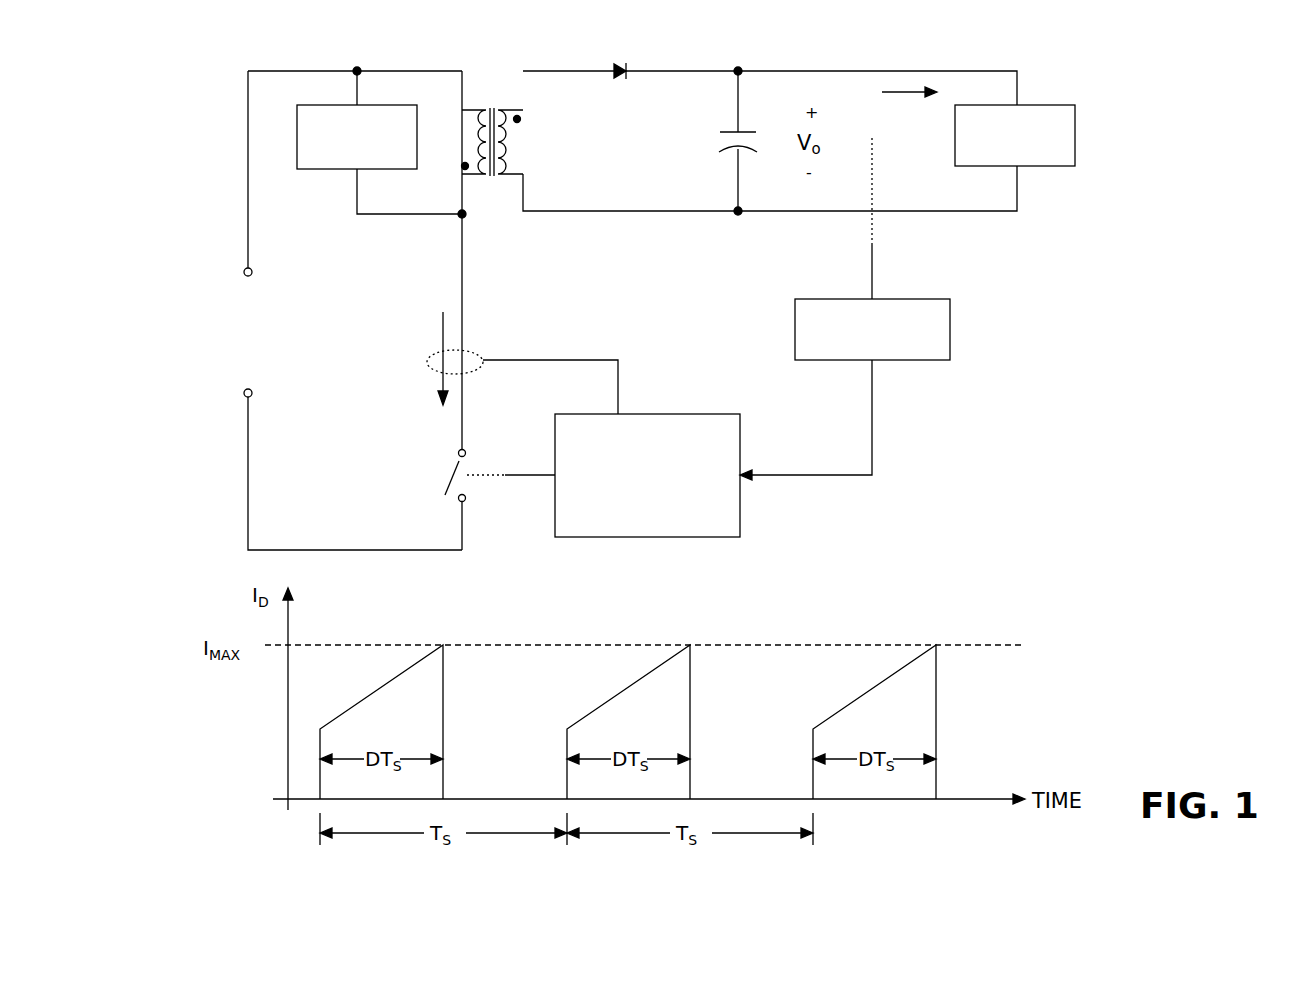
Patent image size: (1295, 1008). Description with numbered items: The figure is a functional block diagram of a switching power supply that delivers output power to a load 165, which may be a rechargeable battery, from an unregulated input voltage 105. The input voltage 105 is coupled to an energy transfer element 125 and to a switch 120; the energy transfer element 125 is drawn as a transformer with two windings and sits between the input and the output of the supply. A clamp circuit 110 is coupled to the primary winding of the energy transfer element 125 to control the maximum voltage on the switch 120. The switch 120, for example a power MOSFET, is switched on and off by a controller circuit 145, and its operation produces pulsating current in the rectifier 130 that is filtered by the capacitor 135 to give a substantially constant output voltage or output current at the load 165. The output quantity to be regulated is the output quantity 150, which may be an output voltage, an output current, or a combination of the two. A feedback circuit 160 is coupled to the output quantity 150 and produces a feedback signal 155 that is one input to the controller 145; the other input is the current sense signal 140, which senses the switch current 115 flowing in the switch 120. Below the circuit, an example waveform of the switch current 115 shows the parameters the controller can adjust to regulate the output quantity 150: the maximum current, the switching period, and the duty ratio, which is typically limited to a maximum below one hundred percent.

The input voltage V_IN 105 is at (233, 352).
The clamp circuit 110 is at (330, 172).
The current I_D 115 is at (428, 315).
The switch S1 120 is at (445, 462).
The energy transfer element T1 125 is at (492, 195).
The rectifier D1 130 is at (612, 80).
The capacitor C1 135 is at (728, 126).
The current sense signal 140 is at (610, 352).
The controller circuit 145 is at (728, 412).
The output quantity U_O 150 is at (868, 272).
The feedback signal U_FB 155 is at (876, 432).
The feedback circuit 160 is at (952, 330).
The load 165 is at (1030, 100).